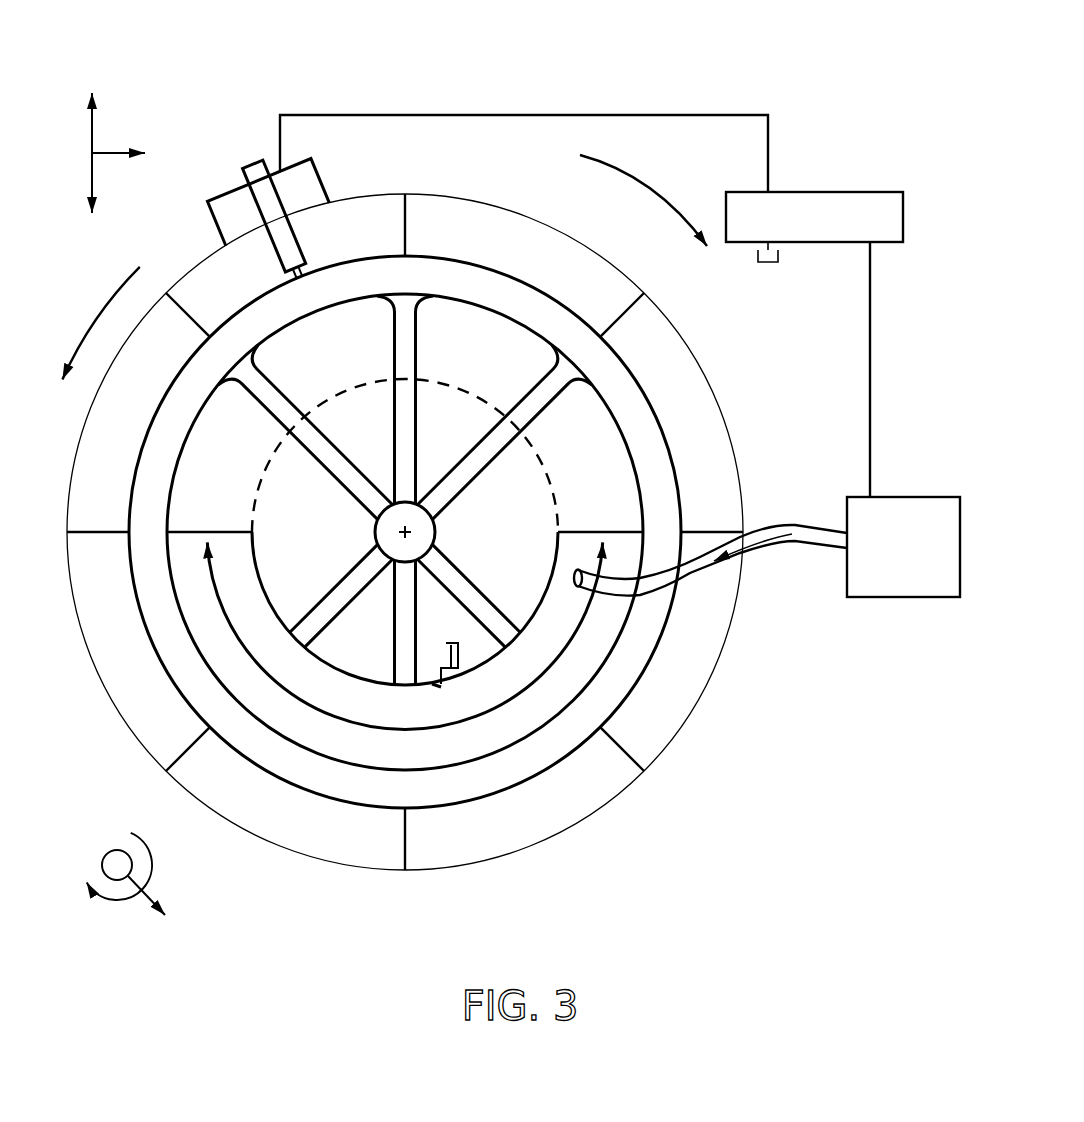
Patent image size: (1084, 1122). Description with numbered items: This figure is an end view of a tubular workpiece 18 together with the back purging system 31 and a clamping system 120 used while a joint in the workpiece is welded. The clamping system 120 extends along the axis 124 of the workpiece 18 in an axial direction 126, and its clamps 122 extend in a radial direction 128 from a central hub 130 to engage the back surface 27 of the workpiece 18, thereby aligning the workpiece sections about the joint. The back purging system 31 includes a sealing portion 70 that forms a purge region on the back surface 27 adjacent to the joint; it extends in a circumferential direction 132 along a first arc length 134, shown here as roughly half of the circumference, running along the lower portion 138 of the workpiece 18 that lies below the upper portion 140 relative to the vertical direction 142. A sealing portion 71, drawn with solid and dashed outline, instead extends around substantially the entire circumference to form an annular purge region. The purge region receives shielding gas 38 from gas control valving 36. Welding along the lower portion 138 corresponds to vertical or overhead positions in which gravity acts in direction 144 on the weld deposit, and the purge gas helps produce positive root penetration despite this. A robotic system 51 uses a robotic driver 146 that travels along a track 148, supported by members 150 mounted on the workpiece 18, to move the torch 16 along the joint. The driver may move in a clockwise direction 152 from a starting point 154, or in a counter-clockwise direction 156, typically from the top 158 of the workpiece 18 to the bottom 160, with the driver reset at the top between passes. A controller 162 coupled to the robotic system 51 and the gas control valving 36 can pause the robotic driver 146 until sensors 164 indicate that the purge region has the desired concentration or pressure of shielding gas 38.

The torch 16 is at (258, 172).
The tubular workpiece 18 is at (650, 428).
The back surface 27 is at (483, 311).
The back purging system 31 is at (516, 354).
The gas control valving 36 is at (900, 497).
The shielding gas 38 is at (755, 546).
The robotic system 51 is at (185, 82).
The sealing portion 70 is at (328, 676).
The sealing portion 71 is at (557, 580).
The clamping system 120 is at (425, 488).
The clamps 122 is at (378, 305).
The axis 124 is at (435, 537).
The axial direction 126 is at (108, 853).
The radial direction 128 is at (150, 893).
The hub 130 is at (380, 532).
The circumferential direction 132 is at (148, 851).
The first arc length 134 is at (448, 723).
The lower portion 138 is at (585, 778).
The upper portion 140 is at (516, 280).
The vertical direction 142 is at (93, 128).
The gravity direction 144 is at (92, 182).
The robotic driver 146 is at (222, 209).
The track 148 is at (717, 400).
The members 150 is at (100, 533).
The clockwise direction 152 is at (645, 192).
The starting point 154 is at (241, 154).
The counter-clockwise direction 156 is at (93, 322).
The top 158 is at (405, 190).
The bottom 160 is at (381, 878).
The controller 162 is at (815, 192).
The sensors 164 is at (438, 689).